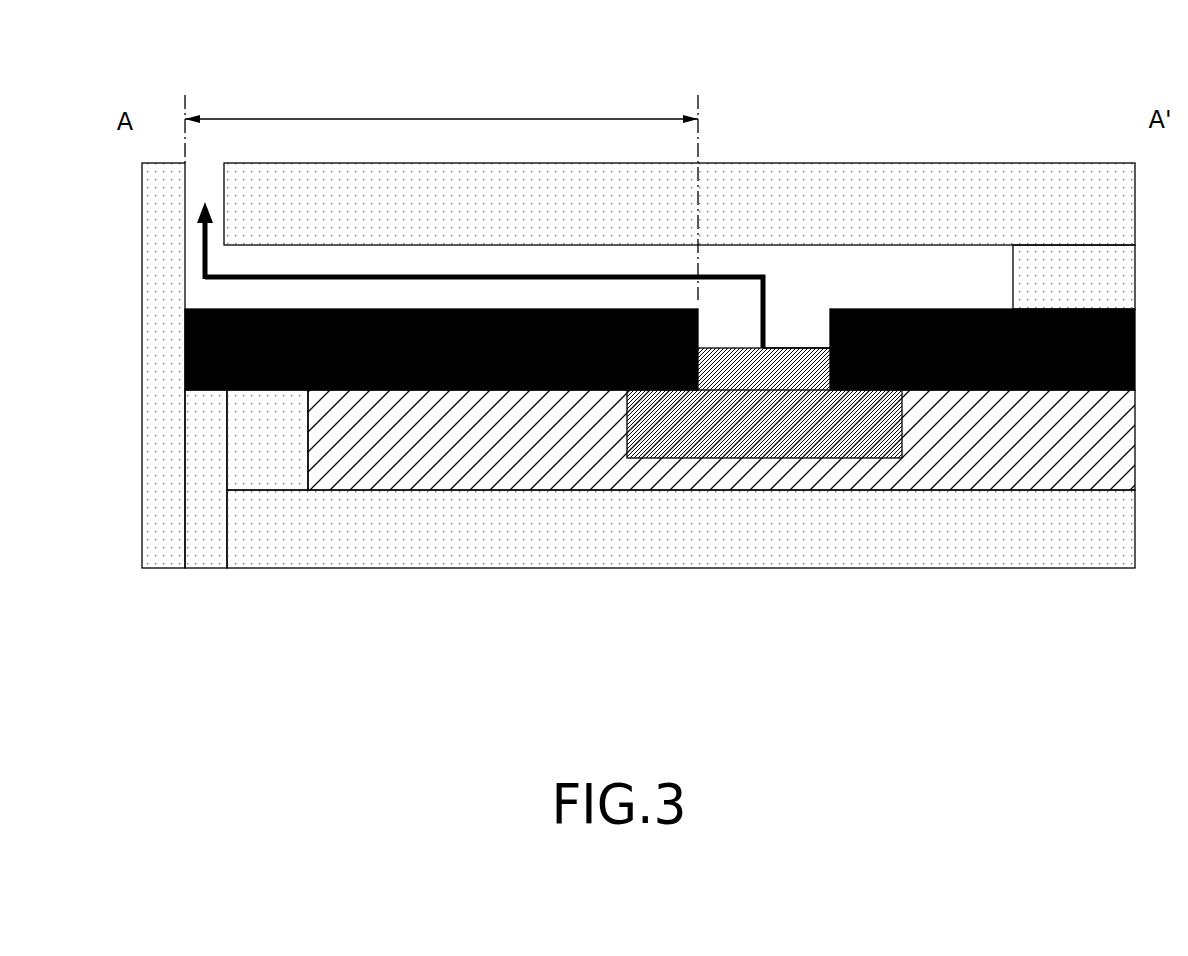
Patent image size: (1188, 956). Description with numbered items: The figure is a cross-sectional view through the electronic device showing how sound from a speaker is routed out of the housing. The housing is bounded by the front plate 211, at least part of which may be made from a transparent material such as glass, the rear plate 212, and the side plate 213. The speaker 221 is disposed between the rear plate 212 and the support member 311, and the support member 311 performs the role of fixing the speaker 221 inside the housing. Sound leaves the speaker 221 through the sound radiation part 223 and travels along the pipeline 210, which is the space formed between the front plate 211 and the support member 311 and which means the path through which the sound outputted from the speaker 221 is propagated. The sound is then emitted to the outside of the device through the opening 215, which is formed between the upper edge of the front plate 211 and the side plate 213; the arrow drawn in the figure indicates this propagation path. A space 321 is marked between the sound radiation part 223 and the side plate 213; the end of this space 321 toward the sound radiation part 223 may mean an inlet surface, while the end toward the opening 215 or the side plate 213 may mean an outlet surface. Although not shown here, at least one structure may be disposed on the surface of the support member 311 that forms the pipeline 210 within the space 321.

The pipeline 210 is at (453, 255).
The front plate 211 is at (995, 200).
The rear plate 212 is at (905, 548).
The side plate 213 is at (160, 428).
The opening 215 is at (212, 186).
The speaker 221 is at (684, 436).
The sound radiation part 223 is at (799, 322).
The support member 311 is at (185, 351).
The space 321 is at (440, 118).